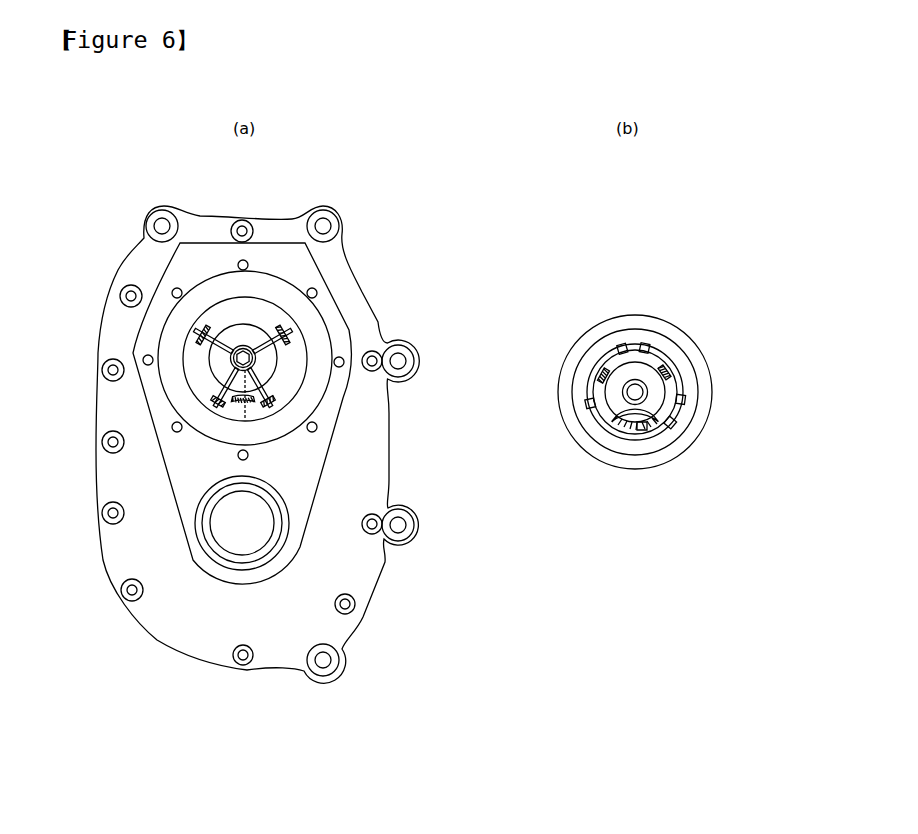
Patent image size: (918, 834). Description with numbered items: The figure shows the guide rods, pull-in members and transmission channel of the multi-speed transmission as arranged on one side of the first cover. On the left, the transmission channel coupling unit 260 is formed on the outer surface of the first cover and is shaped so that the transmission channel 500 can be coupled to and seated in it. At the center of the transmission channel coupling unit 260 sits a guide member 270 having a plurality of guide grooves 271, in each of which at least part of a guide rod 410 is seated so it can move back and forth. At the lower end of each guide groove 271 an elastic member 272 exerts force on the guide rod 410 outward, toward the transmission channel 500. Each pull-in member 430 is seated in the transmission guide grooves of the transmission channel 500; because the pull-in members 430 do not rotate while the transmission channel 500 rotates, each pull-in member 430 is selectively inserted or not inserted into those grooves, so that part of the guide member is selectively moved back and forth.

The transmission channel coupling unit 260 is at (223, 313).
The guide member 270 is at (245, 322).
The guide groove 271 is at (218, 382).
The elastic member 272 is at (212, 354).
The guide rod 410 is at (290, 298).
The pull-in member 430 is at (280, 333).
The transmission channel 500 is at (633, 315).